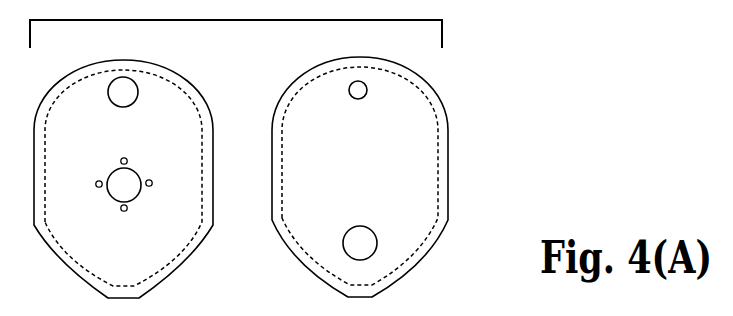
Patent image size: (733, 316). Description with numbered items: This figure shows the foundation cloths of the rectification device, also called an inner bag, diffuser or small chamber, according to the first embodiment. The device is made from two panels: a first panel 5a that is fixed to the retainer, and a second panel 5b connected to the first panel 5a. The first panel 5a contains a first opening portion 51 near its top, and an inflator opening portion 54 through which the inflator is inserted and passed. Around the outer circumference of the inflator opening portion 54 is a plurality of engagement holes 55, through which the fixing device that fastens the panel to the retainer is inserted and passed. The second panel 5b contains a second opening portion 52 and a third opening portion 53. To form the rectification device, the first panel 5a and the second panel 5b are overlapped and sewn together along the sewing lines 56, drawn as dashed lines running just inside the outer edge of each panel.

The first panel 5a is at (214, 148).
The second panel 5b is at (449, 148).
The first opening portion 51 is at (121, 108).
The second opening portion 52 is at (360, 226).
The third opening portion 53 is at (358, 99).
The inflator opening portion 54 is at (109, 197).
The engagement holes 55 is at (128, 159).
The sewing lines 56 is at (200, 206).